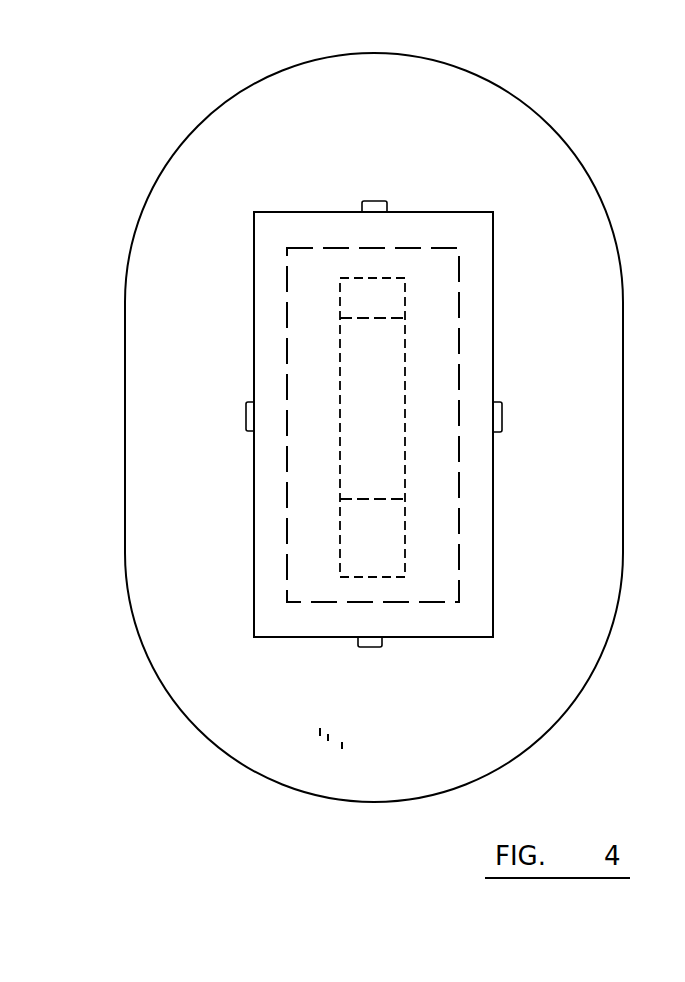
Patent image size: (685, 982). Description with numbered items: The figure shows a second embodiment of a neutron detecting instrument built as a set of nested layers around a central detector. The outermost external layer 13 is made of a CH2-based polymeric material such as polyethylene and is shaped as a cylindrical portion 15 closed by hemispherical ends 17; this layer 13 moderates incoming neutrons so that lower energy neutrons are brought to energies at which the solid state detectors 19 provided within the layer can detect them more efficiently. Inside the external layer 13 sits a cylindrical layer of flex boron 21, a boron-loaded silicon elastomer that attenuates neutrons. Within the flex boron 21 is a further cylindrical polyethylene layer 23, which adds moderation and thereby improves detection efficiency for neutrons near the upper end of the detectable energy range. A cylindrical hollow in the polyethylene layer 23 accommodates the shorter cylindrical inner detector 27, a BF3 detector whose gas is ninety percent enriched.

The external layer 13 is at (213, 212).
The cylindrical portion 15 is at (327, 433).
The hemispherical ends 17 is at (465, 130).
The solid state detectors 19 is at (503, 408).
The flex boron layer 21 is at (477, 248).
The further polyethylene layer 23 is at (437, 360).
The inner detector 27 is at (388, 458).